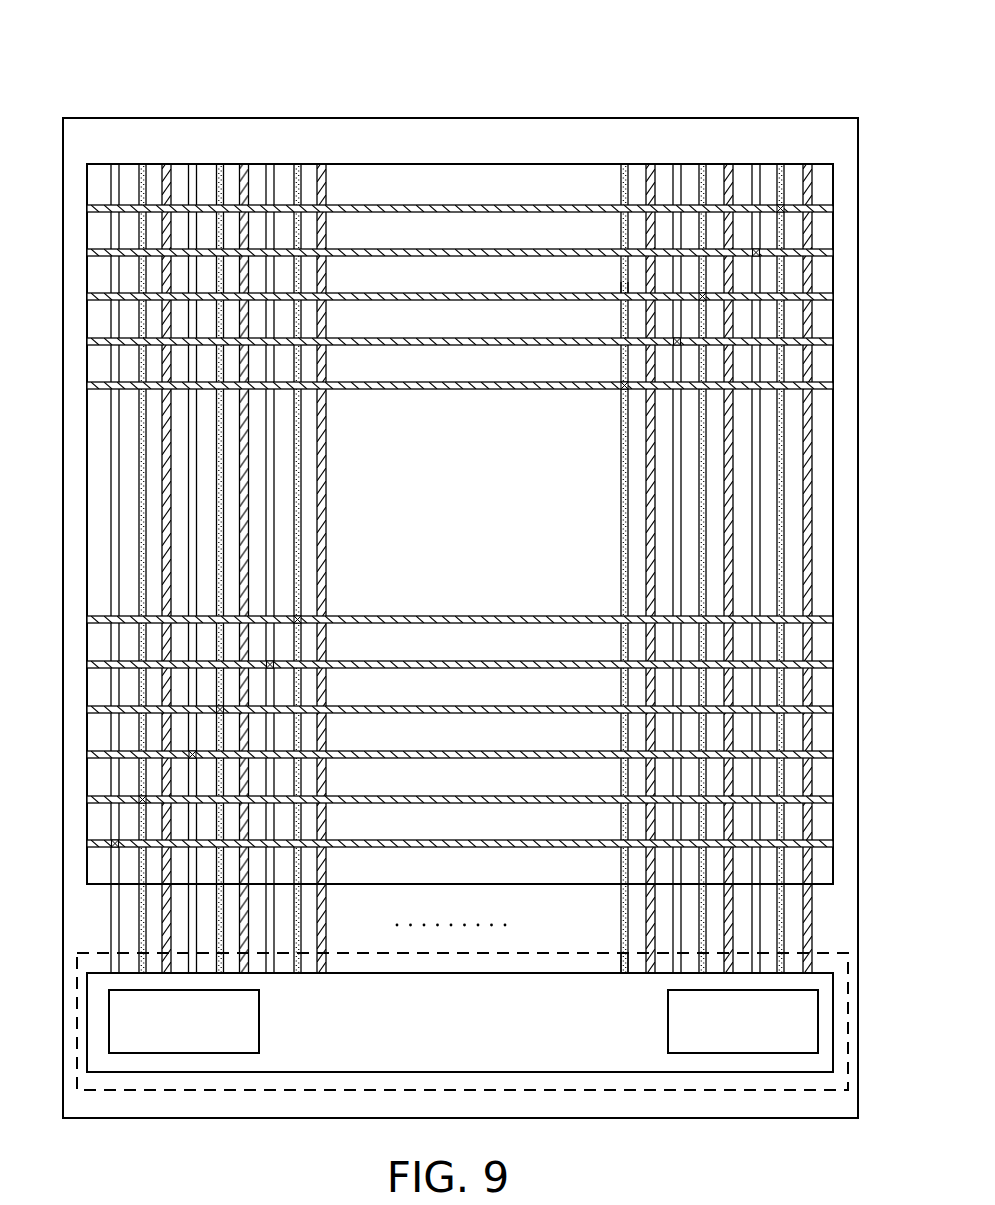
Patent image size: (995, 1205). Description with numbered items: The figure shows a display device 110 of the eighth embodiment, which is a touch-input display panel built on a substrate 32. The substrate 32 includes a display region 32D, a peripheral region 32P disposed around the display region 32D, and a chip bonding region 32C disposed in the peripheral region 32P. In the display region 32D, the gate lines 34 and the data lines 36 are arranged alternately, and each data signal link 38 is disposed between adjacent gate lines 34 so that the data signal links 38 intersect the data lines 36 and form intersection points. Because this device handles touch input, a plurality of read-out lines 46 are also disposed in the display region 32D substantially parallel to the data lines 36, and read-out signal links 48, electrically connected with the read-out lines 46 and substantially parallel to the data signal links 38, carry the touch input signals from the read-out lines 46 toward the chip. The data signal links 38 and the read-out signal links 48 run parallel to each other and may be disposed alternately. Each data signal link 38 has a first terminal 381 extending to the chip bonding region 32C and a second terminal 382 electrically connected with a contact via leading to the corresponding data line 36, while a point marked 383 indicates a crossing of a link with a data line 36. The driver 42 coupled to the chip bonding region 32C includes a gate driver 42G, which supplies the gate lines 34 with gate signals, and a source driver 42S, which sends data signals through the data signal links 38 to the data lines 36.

The display device 110 is at (724, 71).
The substrate 32 is at (859, 283).
The display region 32D is at (402, 185).
The peripheral region 32P is at (847, 357).
The chip bonding region 32C is at (848, 985).
The gate lines 34 is at (328, 577).
The data lines 36 is at (447, 205).
The data signal links 38 is at (295, 537).
The read-out lines 46 is at (363, 249).
The read-out signal links 48 is at (272, 485).
The first terminal 381 is at (612, 965).
The second terminal 382 is at (614, 396).
The crossing portion 383 is at (612, 280).
The gate driver 42 is at (470, 1036).
The gate driver 42G is at (205, 1036).
The source driver 42S is at (718, 1036).